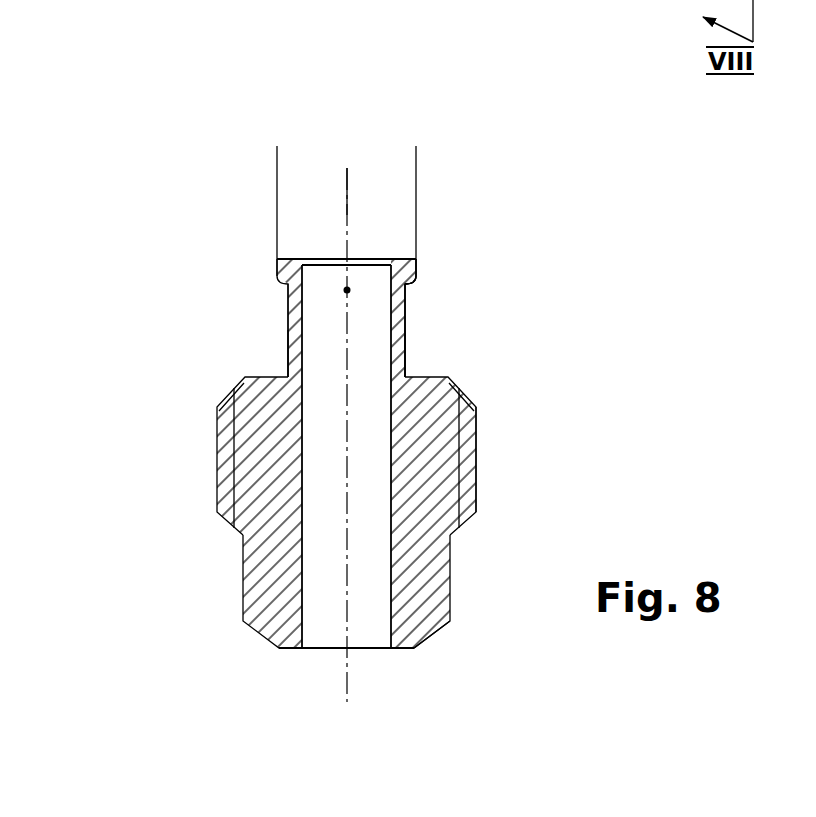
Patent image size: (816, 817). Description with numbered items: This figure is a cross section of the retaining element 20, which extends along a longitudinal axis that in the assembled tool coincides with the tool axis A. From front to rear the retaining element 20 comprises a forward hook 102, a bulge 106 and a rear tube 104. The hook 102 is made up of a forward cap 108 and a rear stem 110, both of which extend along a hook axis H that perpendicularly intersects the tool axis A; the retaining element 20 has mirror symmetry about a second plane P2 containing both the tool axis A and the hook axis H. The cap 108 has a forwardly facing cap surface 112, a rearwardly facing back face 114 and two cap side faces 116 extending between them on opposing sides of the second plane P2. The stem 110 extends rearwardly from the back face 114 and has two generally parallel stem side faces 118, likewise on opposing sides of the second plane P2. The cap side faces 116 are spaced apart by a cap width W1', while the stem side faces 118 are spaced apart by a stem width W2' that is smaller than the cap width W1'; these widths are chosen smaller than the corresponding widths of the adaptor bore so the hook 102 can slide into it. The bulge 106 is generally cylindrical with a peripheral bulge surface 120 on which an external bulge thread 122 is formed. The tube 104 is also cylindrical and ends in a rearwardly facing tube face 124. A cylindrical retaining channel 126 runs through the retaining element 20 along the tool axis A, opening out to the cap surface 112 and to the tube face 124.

The retaining element 20 is at (172, 97).
The forward hook 102 is at (230, 315).
The rear tube 104 is at (243, 592).
The bulge 106 is at (215, 462).
The forward cap 108 is at (417, 277).
The rear stem 110 is at (406, 323).
The cap surface 112 is at (397, 258).
The back face 114 is at (406, 287).
The cap side faces 116 is at (277, 263).
The stem side faces 118 is at (288, 347).
The bulge surface 120 is at (477, 437).
The external bulge thread 122 is at (472, 483).
The tube face 124 is at (433, 633).
The retaining channel 126 is at (362, 650).
The cap width W1' is at (321, 201).
The stem width W2' is at (309, 354).
The second plane P2 is at (344, 212).
The tool axis A is at (347, 192).
The hook axis H is at (347, 290).